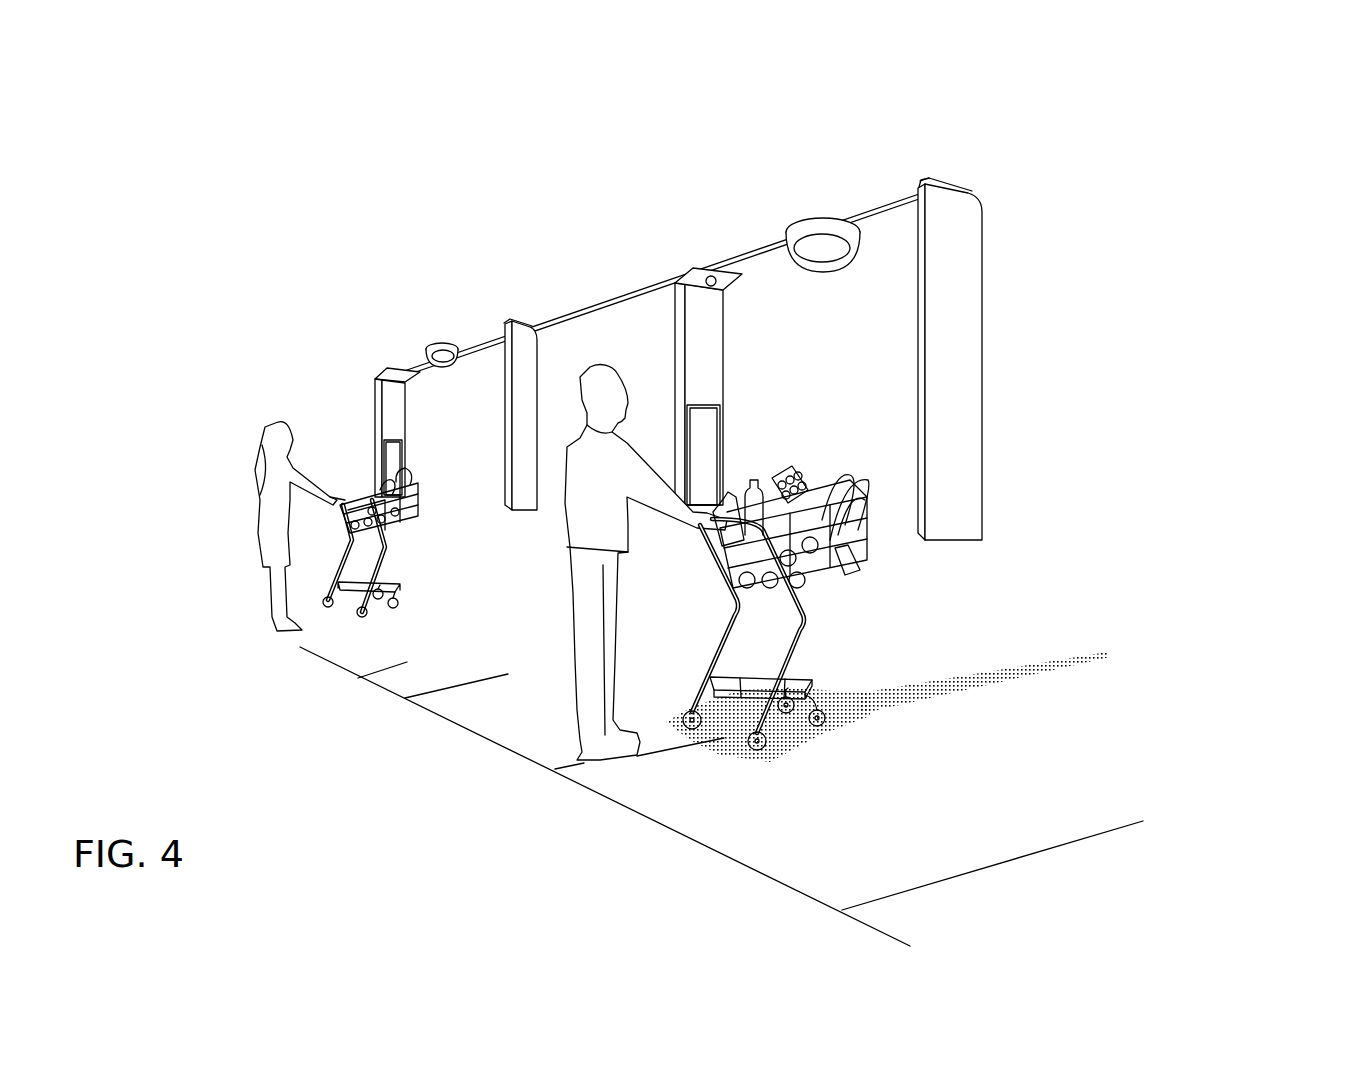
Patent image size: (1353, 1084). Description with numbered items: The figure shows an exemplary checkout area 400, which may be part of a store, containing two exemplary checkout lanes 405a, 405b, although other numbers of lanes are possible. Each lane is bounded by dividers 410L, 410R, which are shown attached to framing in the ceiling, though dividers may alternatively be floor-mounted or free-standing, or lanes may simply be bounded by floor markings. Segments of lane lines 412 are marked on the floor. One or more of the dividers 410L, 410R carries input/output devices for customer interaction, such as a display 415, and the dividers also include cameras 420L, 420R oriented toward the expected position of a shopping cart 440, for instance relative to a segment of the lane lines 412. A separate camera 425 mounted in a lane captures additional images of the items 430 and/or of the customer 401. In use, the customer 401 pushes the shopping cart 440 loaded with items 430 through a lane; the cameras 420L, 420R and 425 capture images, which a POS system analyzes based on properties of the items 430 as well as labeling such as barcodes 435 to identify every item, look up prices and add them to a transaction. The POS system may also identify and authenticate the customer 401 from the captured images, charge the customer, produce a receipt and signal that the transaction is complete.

The checkout area 400 is at (1228, 156).
The customer 401 is at (571, 700).
The checkout lane 405a is at (1004, 294).
The checkout lane 405b is at (456, 296).
The divider 410L is at (766, 386).
The divider 410R is at (982, 284).
The lane lines 412 is at (642, 815).
The display 415 is at (705, 423).
The camera 420L is at (720, 285).
The camera 420R is at (991, 163).
The camera 425 is at (822, 217).
The items 430 is at (753, 480).
The barcodes 435 is at (838, 556).
The shopping cart 440 is at (888, 580).